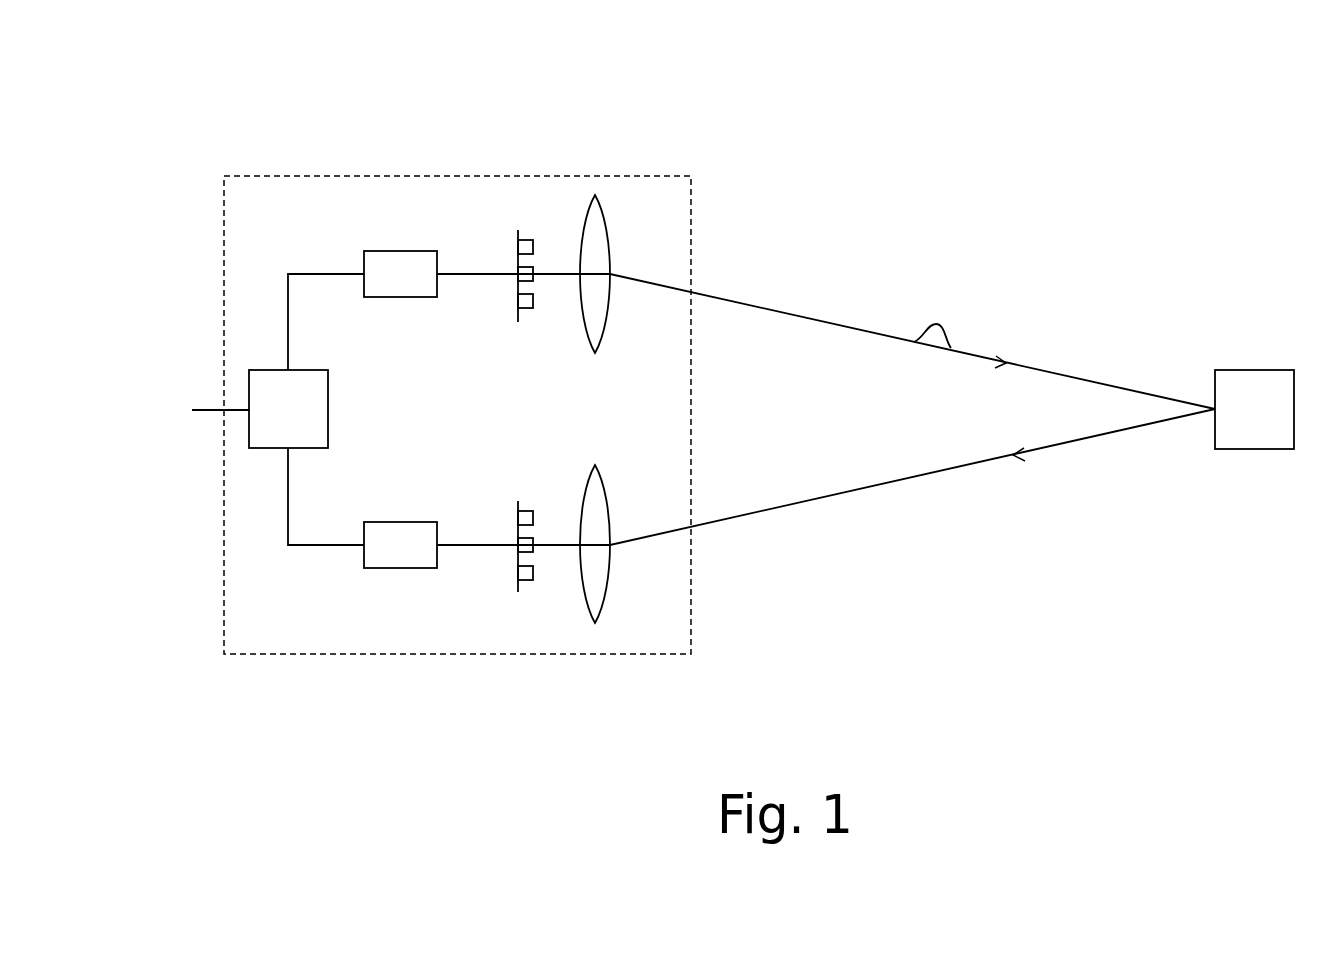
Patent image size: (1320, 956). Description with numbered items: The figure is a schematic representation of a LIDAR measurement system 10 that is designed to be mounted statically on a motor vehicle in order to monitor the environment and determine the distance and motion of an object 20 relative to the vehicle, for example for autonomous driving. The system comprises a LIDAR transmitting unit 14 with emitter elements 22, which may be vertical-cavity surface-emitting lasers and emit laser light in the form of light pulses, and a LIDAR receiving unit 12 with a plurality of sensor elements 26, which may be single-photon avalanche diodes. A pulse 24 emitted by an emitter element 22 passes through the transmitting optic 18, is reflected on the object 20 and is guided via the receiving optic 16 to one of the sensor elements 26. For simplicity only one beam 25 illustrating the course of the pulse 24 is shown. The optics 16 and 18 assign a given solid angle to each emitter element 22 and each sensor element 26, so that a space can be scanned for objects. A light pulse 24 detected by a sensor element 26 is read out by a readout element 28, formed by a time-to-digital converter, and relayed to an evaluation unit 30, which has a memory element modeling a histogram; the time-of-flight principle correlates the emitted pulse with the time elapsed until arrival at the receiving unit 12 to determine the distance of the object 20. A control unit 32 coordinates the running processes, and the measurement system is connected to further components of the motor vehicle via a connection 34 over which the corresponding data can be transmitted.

The LIDAR measurement system 10 is at (718, 246).
The LIDAR receiving unit 12 is at (520, 640).
The LIDAR transmitting unit 14 is at (560, 172).
The receiving optic 16 is at (608, 583).
The transmitting optic 18 is at (608, 225).
The object 20 is at (1252, 370).
The emitter elements 22 is at (533, 301).
The pulse 24 is at (946, 331).
The beam 25 is at (1118, 383).
The sensor elements 26 is at (533, 517).
The readout element 28 is at (410, 568).
The evaluation unit 30 is at (249, 436).
The control unit 32 is at (385, 251).
The connection 34 is at (208, 408).